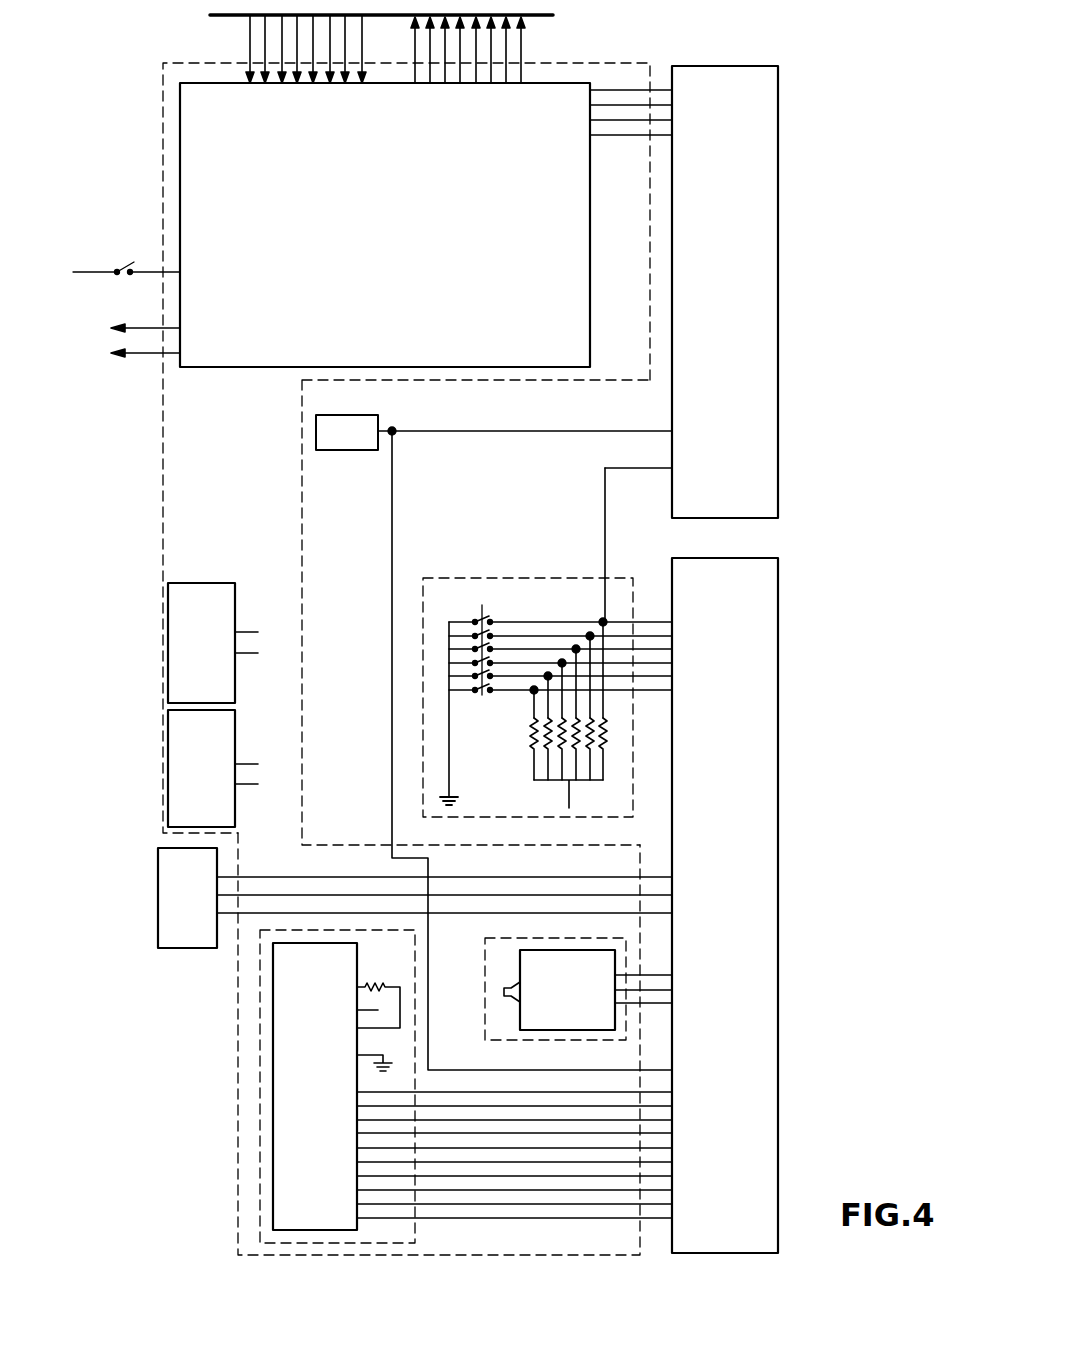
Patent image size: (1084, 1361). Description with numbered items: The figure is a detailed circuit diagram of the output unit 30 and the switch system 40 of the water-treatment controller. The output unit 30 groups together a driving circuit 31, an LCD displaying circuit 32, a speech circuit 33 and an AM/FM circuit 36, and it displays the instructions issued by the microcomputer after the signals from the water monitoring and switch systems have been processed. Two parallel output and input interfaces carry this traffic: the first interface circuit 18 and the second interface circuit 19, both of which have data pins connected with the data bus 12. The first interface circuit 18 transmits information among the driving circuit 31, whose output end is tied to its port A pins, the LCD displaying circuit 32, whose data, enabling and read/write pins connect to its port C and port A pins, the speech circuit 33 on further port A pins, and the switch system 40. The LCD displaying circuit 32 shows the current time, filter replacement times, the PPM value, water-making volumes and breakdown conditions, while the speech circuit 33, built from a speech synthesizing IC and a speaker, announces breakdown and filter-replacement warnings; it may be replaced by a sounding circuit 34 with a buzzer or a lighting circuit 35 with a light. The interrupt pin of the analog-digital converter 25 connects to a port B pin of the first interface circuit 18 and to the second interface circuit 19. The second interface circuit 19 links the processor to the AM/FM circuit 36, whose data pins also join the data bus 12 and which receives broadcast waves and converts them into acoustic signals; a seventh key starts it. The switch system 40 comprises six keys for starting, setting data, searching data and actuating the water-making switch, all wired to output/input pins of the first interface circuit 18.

The data bus 12 is at (487, 14).
The first interface circuit 18 is at (755, 725).
The second interface circuit 19 is at (713, 92).
The analog-digital converter 25 is at (335, 420).
The output unit 30 is at (565, 63).
The driving circuit 31 is at (158, 852).
The LCD displaying circuit 32 is at (260, 1058).
The speech circuit 33 is at (483, 993).
The sounding circuit 34 is at (168, 745).
The lighting circuit 35 is at (168, 657).
The AM/FM circuit 36 is at (211, 147).
The switch system 40 is at (445, 578).